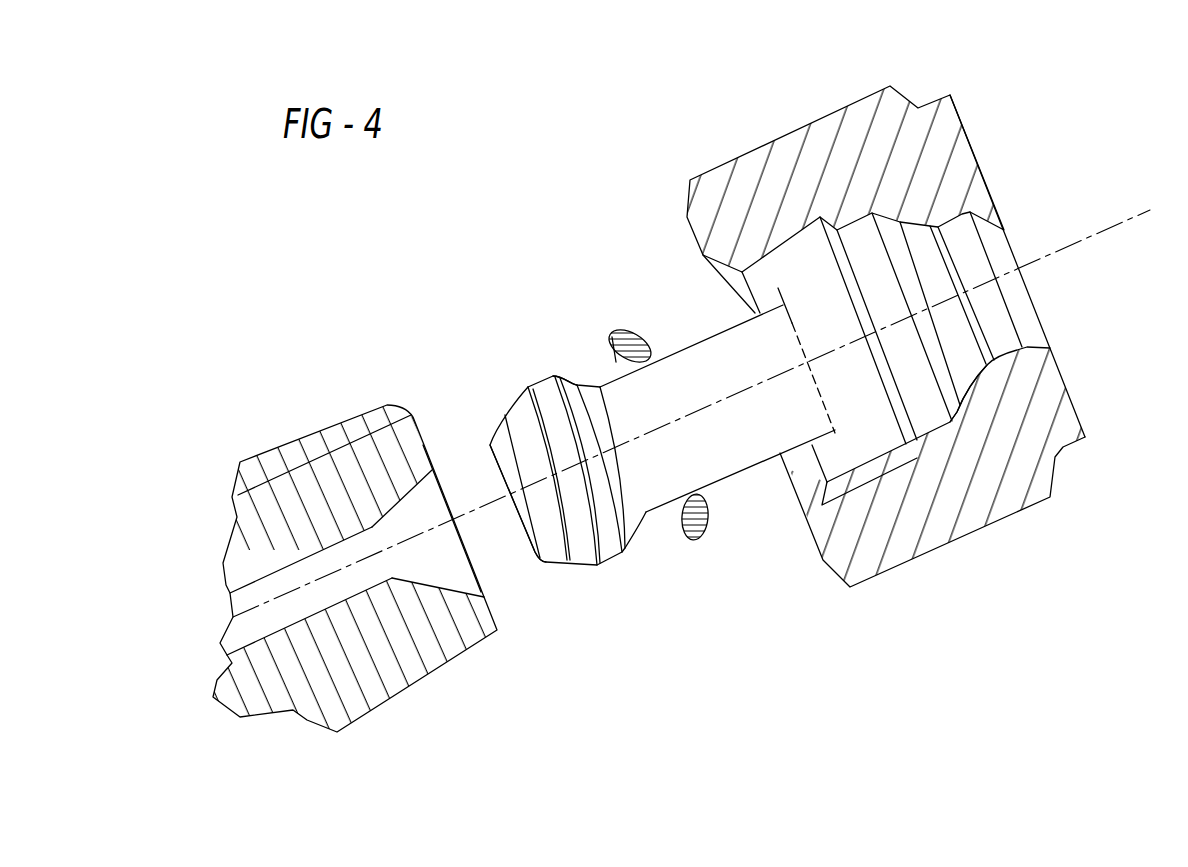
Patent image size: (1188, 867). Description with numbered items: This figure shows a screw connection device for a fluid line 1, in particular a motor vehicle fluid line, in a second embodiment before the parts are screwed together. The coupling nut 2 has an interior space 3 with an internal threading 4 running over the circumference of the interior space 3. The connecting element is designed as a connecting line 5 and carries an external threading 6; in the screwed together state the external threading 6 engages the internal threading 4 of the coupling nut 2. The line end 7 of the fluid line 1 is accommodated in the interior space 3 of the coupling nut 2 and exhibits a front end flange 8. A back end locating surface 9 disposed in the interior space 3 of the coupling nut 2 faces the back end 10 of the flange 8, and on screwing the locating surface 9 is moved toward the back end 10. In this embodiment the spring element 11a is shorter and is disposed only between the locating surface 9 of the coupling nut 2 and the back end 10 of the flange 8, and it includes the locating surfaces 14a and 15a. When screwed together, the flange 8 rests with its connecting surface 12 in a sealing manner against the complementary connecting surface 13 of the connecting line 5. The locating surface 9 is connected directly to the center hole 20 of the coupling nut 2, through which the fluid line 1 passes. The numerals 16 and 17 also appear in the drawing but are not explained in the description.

The fluid line 1 is at (662, 441).
The coupling nut 2 is at (918, 345).
The interior space 3 is at (925, 412).
The internal threading 4 is at (867, 470).
The connecting line 5 is at (355, 544).
The external threading 6 is at (340, 430).
The line end 7 is at (727, 457).
The flange 8 is at (608, 548).
The locating surface 9 is at (900, 222).
The back end of the flange 10 is at (573, 373).
The spring element 11a is at (613, 323).
The connecting surface 12 is at (552, 562).
The complementary connecting surface 13 is at (420, 473).
The locating surface 14a is at (650, 337).
The locating surface 15a is at (673, 517).
The body wall 16 is at (927, 150).
The bore groove 17 is at (962, 222).
The center hole 20 is at (1000, 323).